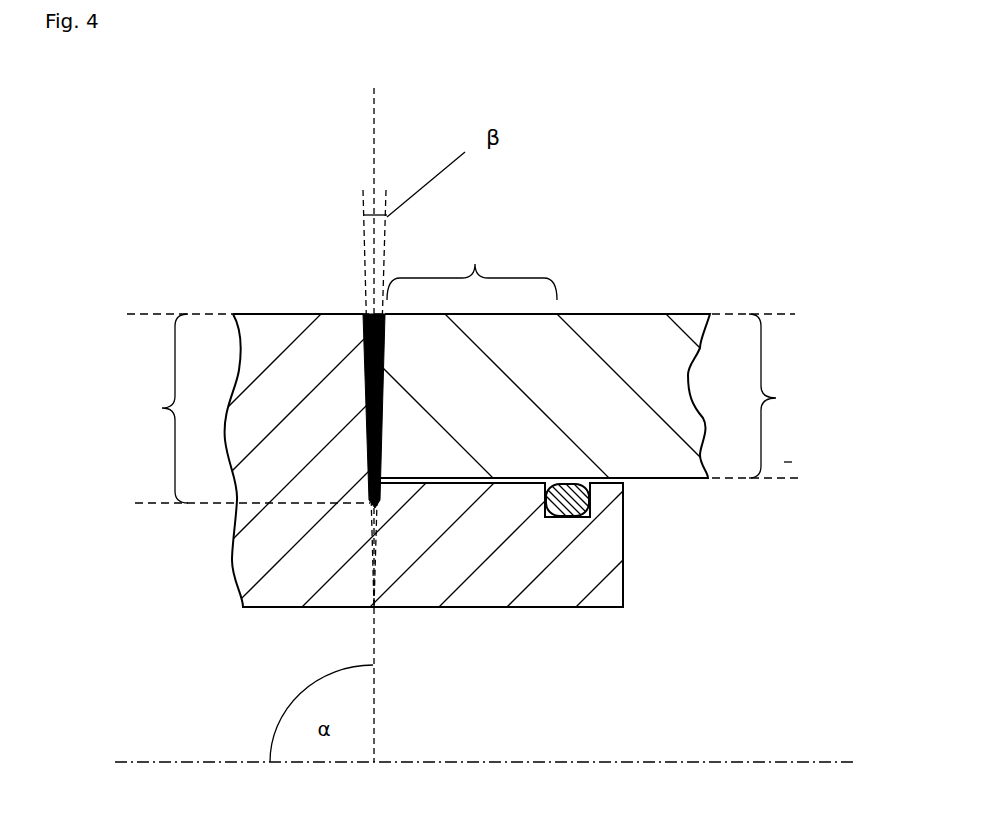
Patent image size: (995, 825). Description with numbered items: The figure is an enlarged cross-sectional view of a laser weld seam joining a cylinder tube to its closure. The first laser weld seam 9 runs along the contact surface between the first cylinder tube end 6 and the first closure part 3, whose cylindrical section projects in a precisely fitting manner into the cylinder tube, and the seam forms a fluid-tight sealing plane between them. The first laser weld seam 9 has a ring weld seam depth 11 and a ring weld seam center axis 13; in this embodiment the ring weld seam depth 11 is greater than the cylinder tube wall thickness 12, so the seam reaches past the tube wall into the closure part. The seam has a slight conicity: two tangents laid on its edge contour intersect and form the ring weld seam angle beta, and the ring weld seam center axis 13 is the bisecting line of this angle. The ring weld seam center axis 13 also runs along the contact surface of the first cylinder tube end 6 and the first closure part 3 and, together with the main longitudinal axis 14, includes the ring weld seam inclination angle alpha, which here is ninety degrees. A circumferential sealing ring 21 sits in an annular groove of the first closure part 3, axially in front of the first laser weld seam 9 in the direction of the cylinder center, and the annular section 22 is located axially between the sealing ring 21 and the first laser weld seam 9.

The first closure part 3 is at (308, 542).
The first cylinder tube end 6 is at (652, 352).
The first laser ring weld seam 9 is at (365, 337).
The ring weld seam depth 11 is at (457, 408).
The cylinder tube wall thickness 12 is at (764, 396).
The ring weld seam center axis 13 is at (375, 130).
The main longitudinal axis 14 is at (673, 762).
The sealing ring 21 is at (582, 512).
The annular section 22 is at (472, 260).